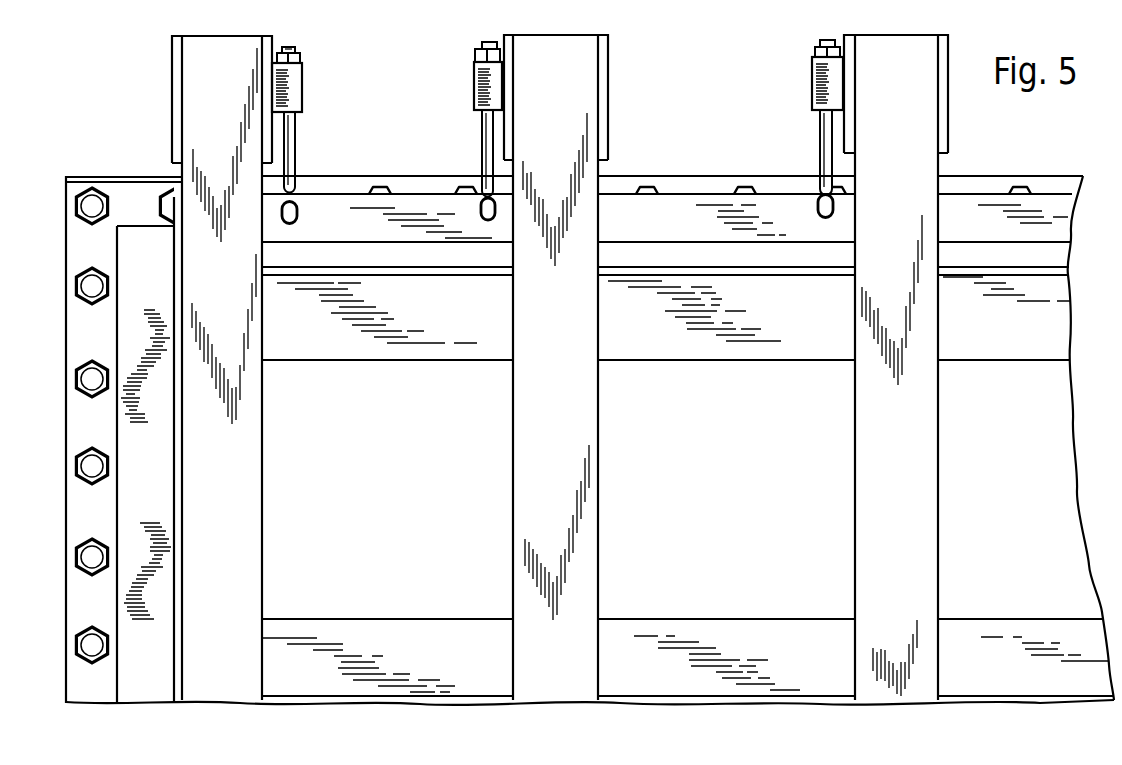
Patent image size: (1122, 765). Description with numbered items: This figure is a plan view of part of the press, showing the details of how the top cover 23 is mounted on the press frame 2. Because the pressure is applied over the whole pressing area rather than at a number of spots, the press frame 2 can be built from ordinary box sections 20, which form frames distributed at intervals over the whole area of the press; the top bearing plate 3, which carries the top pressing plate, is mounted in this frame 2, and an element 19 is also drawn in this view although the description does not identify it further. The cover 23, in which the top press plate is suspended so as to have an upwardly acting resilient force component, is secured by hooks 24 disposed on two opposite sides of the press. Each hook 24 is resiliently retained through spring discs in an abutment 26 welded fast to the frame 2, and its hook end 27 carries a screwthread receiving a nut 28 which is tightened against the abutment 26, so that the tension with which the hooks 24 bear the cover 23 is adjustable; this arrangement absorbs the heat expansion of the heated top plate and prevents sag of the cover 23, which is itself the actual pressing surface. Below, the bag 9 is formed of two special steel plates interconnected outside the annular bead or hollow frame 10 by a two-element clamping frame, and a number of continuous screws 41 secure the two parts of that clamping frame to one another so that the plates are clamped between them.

The press frame 2 is at (930, 114).
The top bearing plate 3 is at (1057, 419).
The bag 9 is at (700, 178).
The hollow frame 10 is at (136, 236).
The cross beam 19 is at (656, 292).
The box sections 20 is at (588, 86).
The cover 23 is at (313, 203).
The hooks 24 is at (296, 125).
The abutment 26 is at (303, 88).
The hook ends 27 is at (295, 48).
The nuts 28 is at (300, 58).
The continuous screws 41 is at (88, 206).